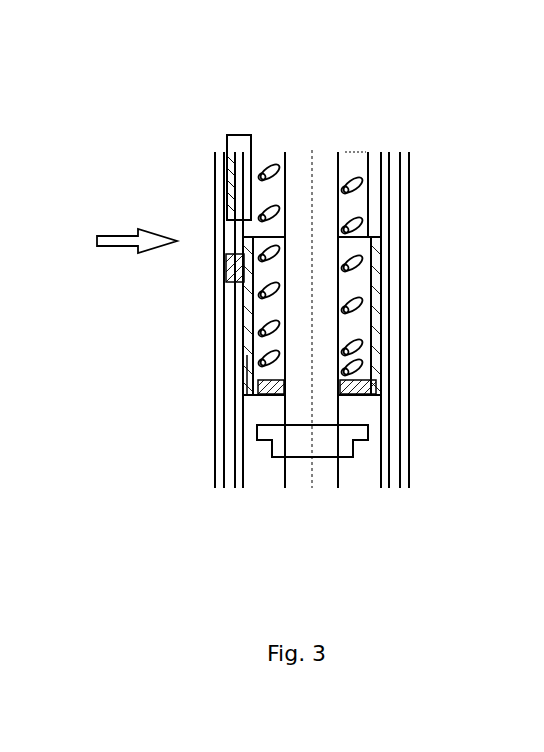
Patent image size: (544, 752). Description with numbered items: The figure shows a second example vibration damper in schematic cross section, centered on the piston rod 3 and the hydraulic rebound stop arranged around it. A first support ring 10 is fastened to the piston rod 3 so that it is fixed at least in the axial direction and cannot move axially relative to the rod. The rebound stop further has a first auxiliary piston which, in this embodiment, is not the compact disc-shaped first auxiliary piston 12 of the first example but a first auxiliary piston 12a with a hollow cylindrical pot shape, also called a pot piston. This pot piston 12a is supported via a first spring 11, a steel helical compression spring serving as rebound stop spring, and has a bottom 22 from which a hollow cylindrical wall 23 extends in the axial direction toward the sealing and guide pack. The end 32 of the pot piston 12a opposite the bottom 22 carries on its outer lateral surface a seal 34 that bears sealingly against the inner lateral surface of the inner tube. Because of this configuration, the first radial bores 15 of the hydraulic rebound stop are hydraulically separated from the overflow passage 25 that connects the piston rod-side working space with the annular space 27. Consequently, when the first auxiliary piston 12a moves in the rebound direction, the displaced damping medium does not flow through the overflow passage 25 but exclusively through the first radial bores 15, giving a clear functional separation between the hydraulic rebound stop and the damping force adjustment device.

The piston rod 3 is at (325, 158).
The first support ring 10 is at (355, 438).
The first spring 11 is at (360, 192).
The first auxiliary piston 12 is at (219, 320).
The first auxiliary piston 12a is at (262, 378).
The first radial bores 15 is at (240, 180).
The bottom 22 is at (353, 375).
The hollow cylindrical wall 23 is at (373, 317).
The overflow passage 25 is at (250, 271).
The annular space 27 is at (397, 224).
The end 32 is at (118, 243).
The seal 34 is at (377, 252).